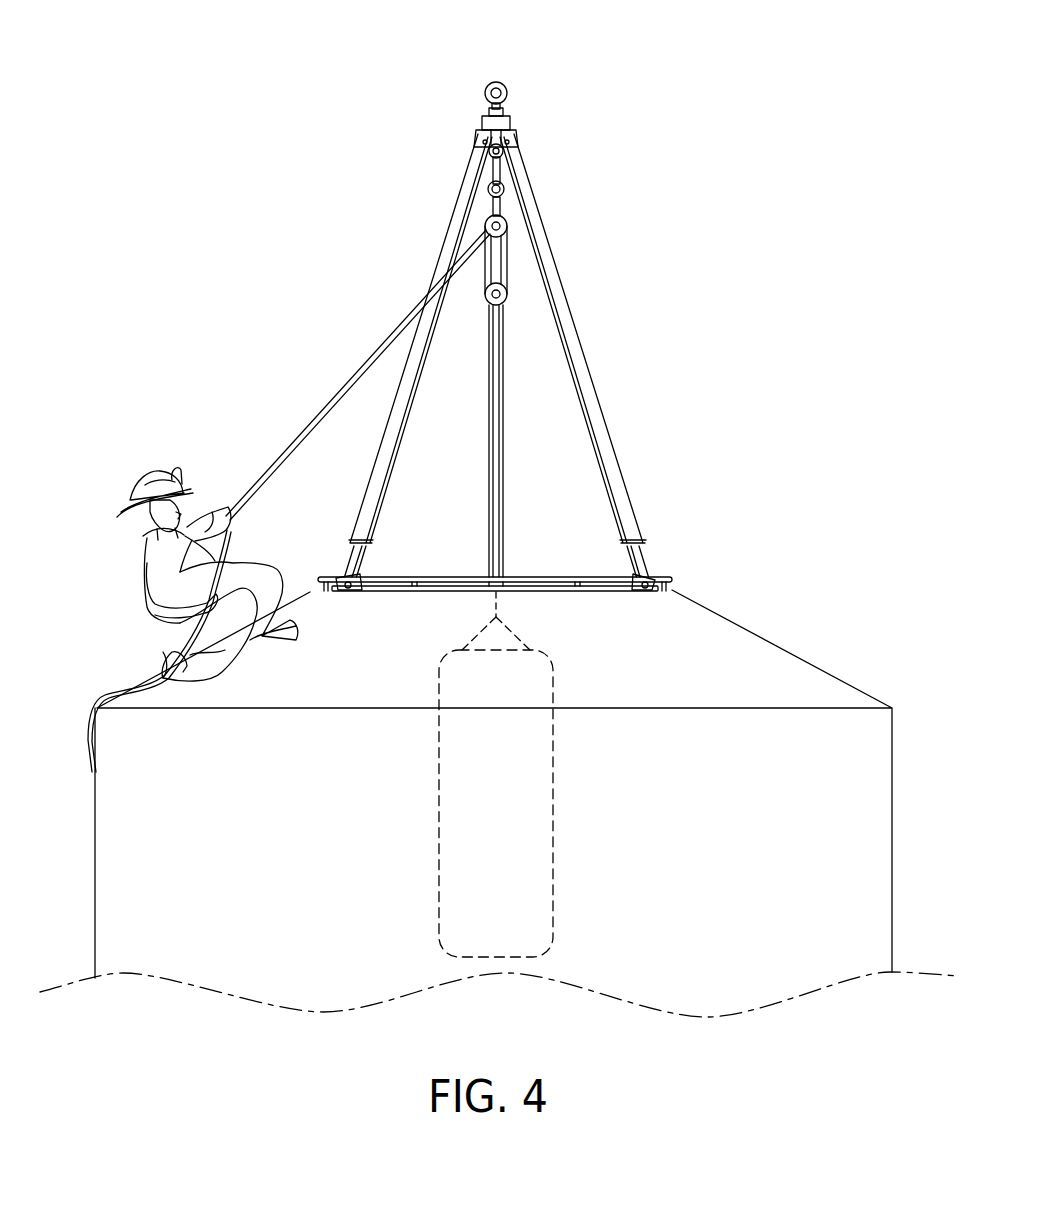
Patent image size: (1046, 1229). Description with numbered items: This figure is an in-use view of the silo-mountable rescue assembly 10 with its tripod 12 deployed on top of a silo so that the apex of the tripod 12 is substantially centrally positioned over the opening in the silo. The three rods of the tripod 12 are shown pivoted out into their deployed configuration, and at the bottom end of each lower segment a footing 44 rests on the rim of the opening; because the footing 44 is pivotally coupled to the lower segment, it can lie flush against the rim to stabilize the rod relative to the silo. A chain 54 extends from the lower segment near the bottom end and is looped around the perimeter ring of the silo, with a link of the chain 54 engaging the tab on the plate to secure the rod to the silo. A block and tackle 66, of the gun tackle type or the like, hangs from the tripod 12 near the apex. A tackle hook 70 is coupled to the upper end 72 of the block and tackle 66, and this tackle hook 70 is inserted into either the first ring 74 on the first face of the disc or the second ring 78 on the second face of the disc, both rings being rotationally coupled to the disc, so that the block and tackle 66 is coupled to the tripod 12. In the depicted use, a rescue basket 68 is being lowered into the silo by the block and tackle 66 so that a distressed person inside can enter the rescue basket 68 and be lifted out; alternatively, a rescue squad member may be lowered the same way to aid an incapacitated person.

The silo-mountable rescue assembly 10 is at (325, 125).
The tripod 12 is at (581, 358).
The footing 44 is at (645, 588).
The chain 54 is at (655, 578).
The block and tackle 66 is at (508, 264).
The rescue basket 68 is at (553, 672).
The tackle hook 70 is at (499, 173).
The upper end 72 is at (504, 188).
The first ring 74 is at (503, 150).
The second ring 78 is at (497, 84).